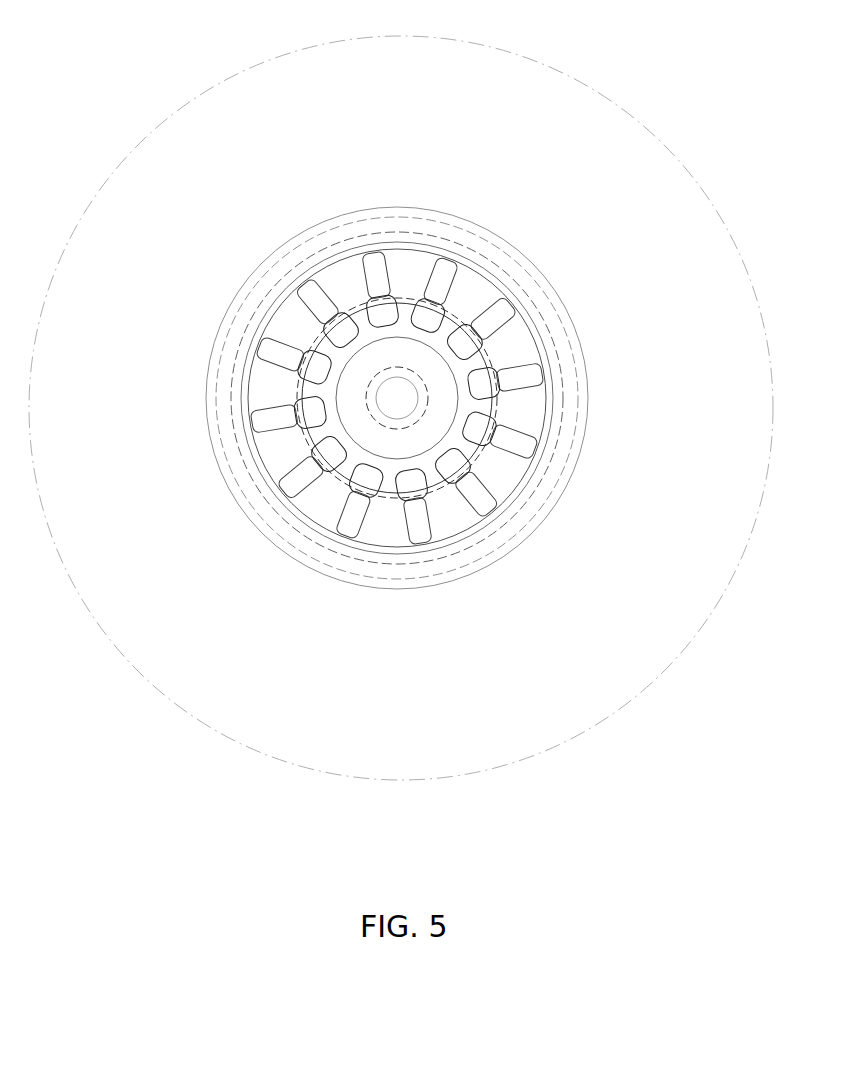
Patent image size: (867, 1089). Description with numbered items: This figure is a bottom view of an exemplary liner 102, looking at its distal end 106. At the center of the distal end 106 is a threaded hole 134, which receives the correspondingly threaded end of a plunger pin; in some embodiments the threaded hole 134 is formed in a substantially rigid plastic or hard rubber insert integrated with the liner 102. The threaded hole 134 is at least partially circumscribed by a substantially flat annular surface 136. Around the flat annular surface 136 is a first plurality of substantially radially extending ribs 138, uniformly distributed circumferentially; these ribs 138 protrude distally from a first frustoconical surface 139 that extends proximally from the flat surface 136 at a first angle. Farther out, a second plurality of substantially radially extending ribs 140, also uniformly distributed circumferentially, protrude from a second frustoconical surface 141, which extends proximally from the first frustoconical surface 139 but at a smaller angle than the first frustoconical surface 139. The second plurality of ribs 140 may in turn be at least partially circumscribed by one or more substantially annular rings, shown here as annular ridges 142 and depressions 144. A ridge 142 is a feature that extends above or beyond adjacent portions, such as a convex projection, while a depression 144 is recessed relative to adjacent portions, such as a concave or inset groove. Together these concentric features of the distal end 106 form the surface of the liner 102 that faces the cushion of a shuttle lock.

The liner 102 is at (223, 128).
The distal end 106 is at (213, 330).
The threaded hole 134 is at (398, 397).
The substantially flat annular surface 136 is at (392, 345).
The first plurality of substantially radially extending ribs 138 is at (452, 453).
The first frustoconical surface 139 is at (476, 355).
The second plurality of substantially radially extending ribs 140 is at (481, 494).
The second frustoconical surface 141 is at (449, 508).
The substantially annular ridges 142 is at (278, 500).
The depressions 144 is at (292, 533).